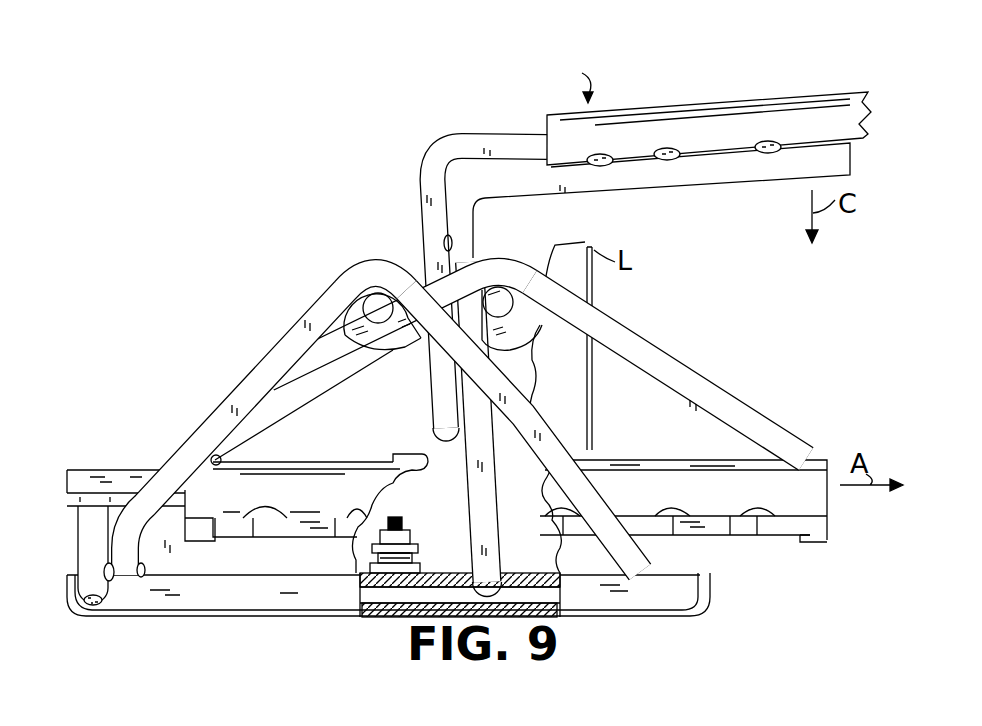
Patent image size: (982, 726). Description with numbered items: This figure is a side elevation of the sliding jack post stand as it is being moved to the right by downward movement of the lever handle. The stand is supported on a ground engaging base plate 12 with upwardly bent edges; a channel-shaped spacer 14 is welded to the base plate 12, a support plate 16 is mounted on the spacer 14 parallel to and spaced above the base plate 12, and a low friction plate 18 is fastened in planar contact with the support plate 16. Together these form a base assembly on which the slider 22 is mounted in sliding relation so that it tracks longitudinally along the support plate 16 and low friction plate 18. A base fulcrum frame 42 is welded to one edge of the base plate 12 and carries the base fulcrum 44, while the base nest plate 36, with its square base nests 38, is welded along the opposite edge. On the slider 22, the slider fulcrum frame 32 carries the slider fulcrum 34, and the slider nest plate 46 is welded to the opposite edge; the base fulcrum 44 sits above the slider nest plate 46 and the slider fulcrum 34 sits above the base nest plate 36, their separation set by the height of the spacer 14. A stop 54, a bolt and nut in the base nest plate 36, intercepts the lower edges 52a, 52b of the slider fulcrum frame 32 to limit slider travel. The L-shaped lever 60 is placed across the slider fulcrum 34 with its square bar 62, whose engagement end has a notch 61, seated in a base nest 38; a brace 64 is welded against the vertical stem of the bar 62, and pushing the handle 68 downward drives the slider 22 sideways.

The base plate 12 is at (215, 600).
The spacer 14 is at (85, 532).
The support plate 16 is at (67, 501).
The low friction plate 18 is at (135, 470).
The slider 22 is at (693, 483).
The slider fulcrum frame 32 is at (725, 386).
The slider fulcrum 34 is at (545, 322).
The base nest plate 36 is at (563, 552).
The base nest 38 is at (512, 573).
The base fulcrum frame 42 is at (258, 368).
The base fulcrum 44 is at (407, 345).
The slider nest plate 46 is at (717, 527).
The lower edge 52a is at (820, 540).
The lower edge 52b is at (200, 535).
The stop 54 is at (403, 517).
The lever 60 is at (566, 76).
The notch 61 is at (473, 570).
The bar 62 is at (705, 182).
The brace 64 is at (419, 178).
The handle 68 is at (782, 112).